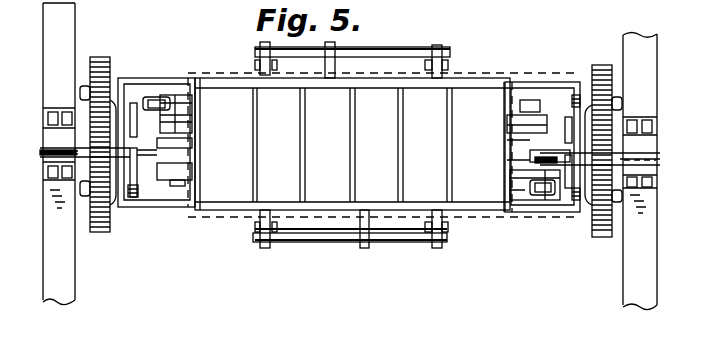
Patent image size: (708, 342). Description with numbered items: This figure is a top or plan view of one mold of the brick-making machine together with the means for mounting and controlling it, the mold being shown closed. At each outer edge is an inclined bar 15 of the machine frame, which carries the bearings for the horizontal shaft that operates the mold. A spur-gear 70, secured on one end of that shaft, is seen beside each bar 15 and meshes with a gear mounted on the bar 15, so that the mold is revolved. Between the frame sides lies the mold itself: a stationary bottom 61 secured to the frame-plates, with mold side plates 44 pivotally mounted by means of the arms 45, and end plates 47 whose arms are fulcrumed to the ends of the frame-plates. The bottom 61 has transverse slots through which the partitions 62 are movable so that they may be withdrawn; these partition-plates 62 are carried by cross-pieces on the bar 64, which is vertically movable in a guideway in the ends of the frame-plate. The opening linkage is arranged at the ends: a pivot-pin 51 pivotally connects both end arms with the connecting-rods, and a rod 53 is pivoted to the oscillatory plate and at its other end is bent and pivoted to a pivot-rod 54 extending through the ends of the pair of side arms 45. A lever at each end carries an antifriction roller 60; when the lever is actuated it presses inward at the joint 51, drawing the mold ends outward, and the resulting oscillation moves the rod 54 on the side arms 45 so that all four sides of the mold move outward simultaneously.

The inclined bar 15 is at (350, 156).
The mold side plate 44 is at (372, 86).
The arms 45 is at (445, 50).
The end plates 47 is at (197, 176).
The pivot-pin 51 is at (162, 176).
The rod 53 is at (335, 69).
The pivot-rod 54 is at (393, 56).
The antifriction roller 60 is at (158, 100).
The bottom 61 is at (367, 145).
The partitions 62 is at (352, 163).
The bar 64 is at (172, 160).
The spur-gear 70 is at (112, 63).